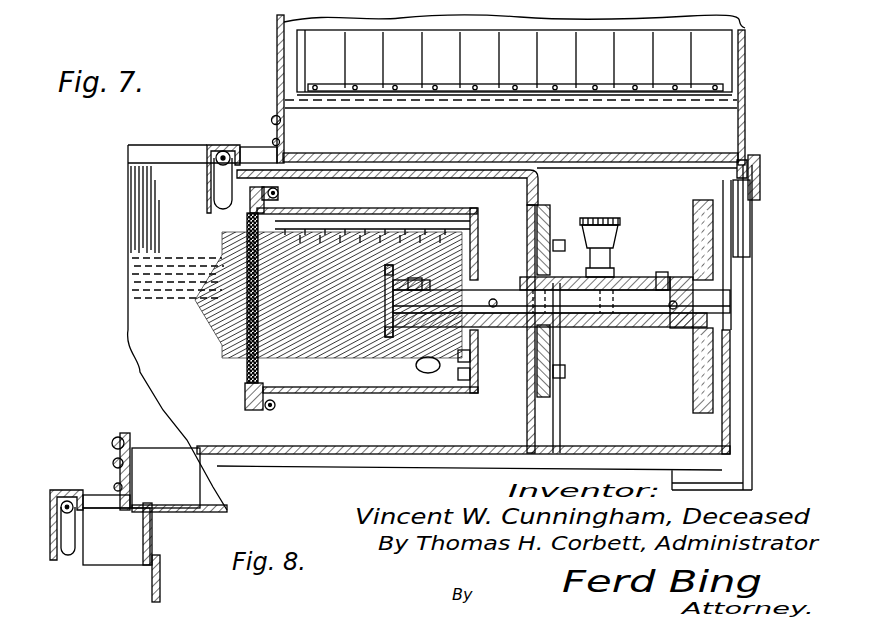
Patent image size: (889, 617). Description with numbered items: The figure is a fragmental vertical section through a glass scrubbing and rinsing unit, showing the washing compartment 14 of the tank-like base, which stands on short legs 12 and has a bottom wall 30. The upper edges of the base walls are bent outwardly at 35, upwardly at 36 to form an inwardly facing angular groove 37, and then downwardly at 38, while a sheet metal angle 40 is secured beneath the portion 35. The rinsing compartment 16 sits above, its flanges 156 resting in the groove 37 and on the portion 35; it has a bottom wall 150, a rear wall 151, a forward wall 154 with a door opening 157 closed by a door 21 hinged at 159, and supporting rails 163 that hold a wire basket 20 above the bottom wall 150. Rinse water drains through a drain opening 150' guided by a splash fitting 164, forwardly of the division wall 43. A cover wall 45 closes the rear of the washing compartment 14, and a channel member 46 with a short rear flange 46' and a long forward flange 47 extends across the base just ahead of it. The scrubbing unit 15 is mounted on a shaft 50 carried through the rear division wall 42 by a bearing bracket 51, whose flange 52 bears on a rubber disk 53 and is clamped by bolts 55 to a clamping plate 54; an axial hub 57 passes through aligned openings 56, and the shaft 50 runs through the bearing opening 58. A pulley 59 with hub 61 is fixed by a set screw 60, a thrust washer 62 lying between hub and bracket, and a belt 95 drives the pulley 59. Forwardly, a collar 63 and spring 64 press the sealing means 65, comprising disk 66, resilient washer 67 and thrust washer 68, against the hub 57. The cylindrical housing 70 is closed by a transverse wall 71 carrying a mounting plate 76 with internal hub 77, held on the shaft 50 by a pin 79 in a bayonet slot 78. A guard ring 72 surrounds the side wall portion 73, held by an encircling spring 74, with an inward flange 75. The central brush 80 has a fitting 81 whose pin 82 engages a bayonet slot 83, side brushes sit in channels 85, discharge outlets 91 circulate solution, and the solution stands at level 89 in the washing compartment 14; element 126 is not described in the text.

In FIG. 7, the legs 12 is at (716, 296).
In FIG. 7, the washing compartment 14 is at (128, 276).
In FIG. 7, the scrubbing unit 15 is at (356, 403).
In FIG. 7, the rinsing compartment 16 is at (274, 69).
In FIG. 7, the wire basket 20 is at (292, 46).
In FIG. 7, the door 21 is at (300, 22).
In FIG. 7, the bottom wall 30 is at (263, 452).
In FIG. 7, the outwardly bent wall portion 35 is at (754, 202).
In FIG. 7, the upwardly bent wall portion 36 is at (746, 160).
In FIG. 7, the angular groove 37 is at (735, 158).
In FIG. 7, the downwardly bent wall portion 38 is at (762, 178).
In FIG. 7, the sheet metal angle 40 is at (752, 238).
In FIG. 7, the rear division wall 42 is at (558, 420).
In FIG. 8, the division wall 43 is at (161, 574).
In FIG. 7, the cover wall 45 is at (348, 178).
In FIG. 7, the channel member 46 is at (195, 168).
In FIG. 8, the channel member 46 is at (65, 513).
In FIG. 7, the rear flange 46' is at (258, 143).
In FIG. 8, the rear flange 46' is at (104, 491).
In FIG. 7, the forward flange 47 is at (207, 200).
In FIG. 8, the forward flange 47 is at (53, 562).
In FIG. 7, the shaft 50 is at (722, 301).
In FIG. 7, the bearing bracket 51 is at (572, 327).
In FIG. 7, the flange 52 is at (566, 370).
In FIG. 7, the rubber disk 53 is at (566, 382).
In FIG. 7, the clamping plate 54 is at (525, 400).
In FIG. 7, the clamping bolts 55 is at (530, 232).
In FIG. 7, the aligned openings 56 is at (550, 278).
In FIG. 7, the axial hub 57 is at (566, 334).
In FIG. 7, the axial bearing opening 58 is at (680, 330).
In FIG. 7, the pulley 59 is at (714, 240).
In FIG. 7, the set screw 60 is at (678, 305).
In FIG. 7, the hub 61 is at (714, 346).
In FIG. 7, the thrust washer 62 is at (662, 272).
In FIG. 7, the collar 63 is at (470, 357).
In FIG. 7, the spring 64 is at (470, 374).
In FIG. 7, the sealing means 65 is at (562, 348).
In FIG. 7, the disk 66 is at (530, 262).
In FIG. 7, the resilient washer 67 is at (528, 274).
In FIG. 7, the thrust washer 68 is at (535, 298).
In FIG. 7, the cylindrical housing 70 is at (345, 208).
In FIG. 7, the transverse wall 71 is at (471, 356).
In FIG. 7, the guard ring 72 is at (249, 417).
In FIG. 7, the side wall portion 73 is at (276, 399).
In FIG. 7, the encircling spring 74 is at (273, 411).
In FIG. 7, the inwardly projecting flange 75 is at (247, 386).
In FIG. 7, the mounting plate 76 is at (470, 392).
In FIG. 7, the internal hub 77 is at (425, 318).
In FIG. 7, the bayonet slot 78 is at (448, 286).
In FIG. 7, the pin 79 is at (440, 294).
In FIG. 7, the central brush 80 is at (203, 326).
In FIG. 7, the fitting 81 is at (397, 305).
In FIG. 7, the pin 82 is at (419, 278).
In FIG. 7, the bayonet slot 83 is at (394, 280).
In FIG. 7, the brush holding channels 85 is at (420, 221).
In FIG. 7, the washing solution level 89 is at (128, 243).
In FIG. 7, the discharge outlets 91 is at (432, 236).
In FIG. 7, the belt 95 is at (705, 200).
In FIG. 7, the belt 126 is at (216, 184).
In FIG. 8, the belt 126 is at (70, 510).
In FIG. 7, the bottom wall 150 is at (507, 89).
In FIG. 8, the bottom wall 150 is at (179, 519).
In FIG. 8, the drain opening 150' is at (166, 478).
In FIG. 7, the rear wall 151 is at (746, 72).
In FIG. 7, the forward wall 154 is at (286, 118).
In FIG. 8, the forward wall 154 is at (131, 478).
In FIG. 7, the flanges 156 is at (497, 168).
In FIG. 7, the door opening 157 is at (278, 88).
In FIG. 7, the hinge 159 is at (270, 120).
In FIG. 8, the hinge 159 is at (112, 462).
In FIG. 7, the supporting rails 163 is at (428, 106).
In FIG. 8, the splash fitting 164 is at (102, 565).